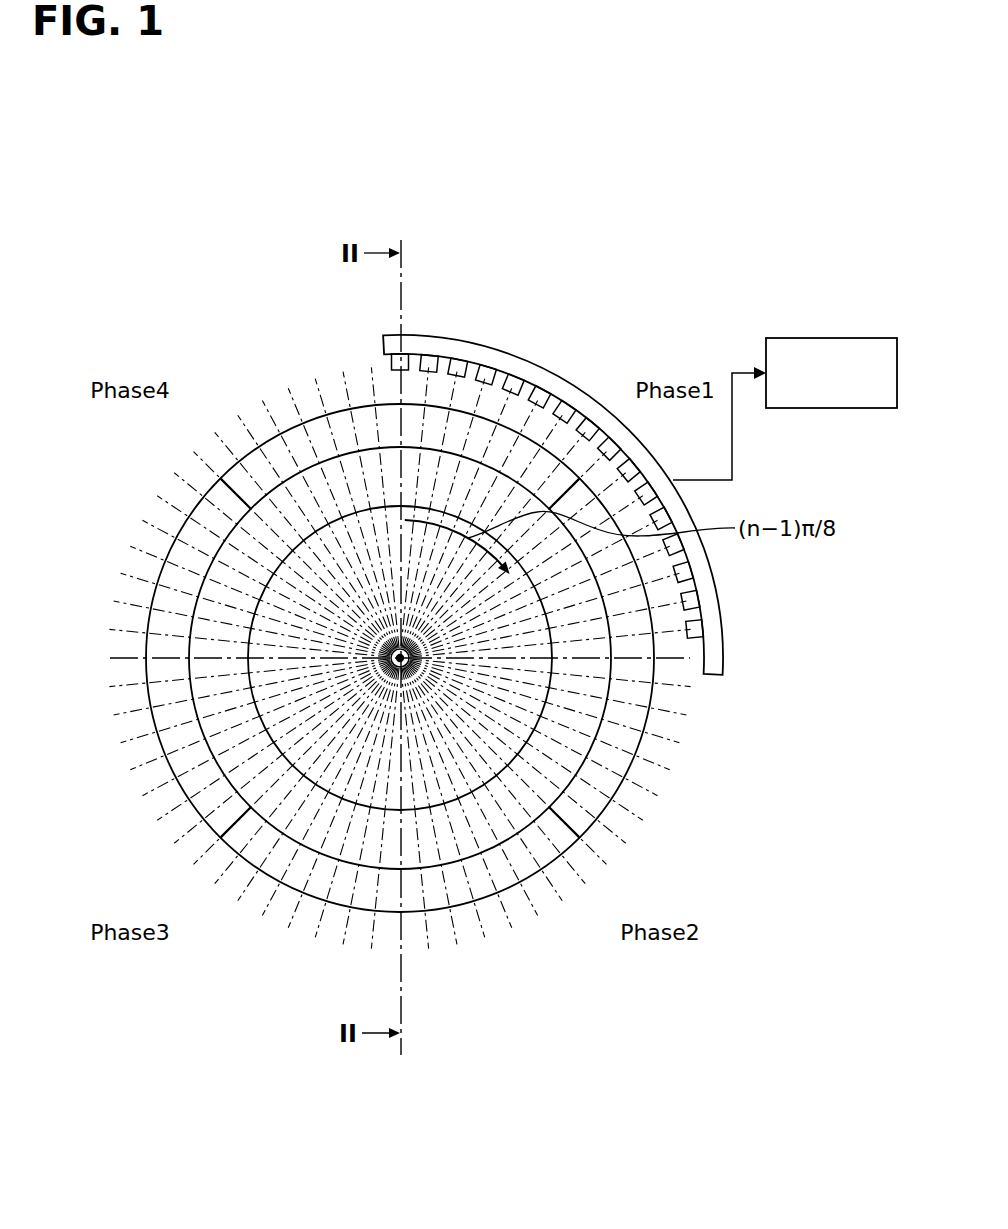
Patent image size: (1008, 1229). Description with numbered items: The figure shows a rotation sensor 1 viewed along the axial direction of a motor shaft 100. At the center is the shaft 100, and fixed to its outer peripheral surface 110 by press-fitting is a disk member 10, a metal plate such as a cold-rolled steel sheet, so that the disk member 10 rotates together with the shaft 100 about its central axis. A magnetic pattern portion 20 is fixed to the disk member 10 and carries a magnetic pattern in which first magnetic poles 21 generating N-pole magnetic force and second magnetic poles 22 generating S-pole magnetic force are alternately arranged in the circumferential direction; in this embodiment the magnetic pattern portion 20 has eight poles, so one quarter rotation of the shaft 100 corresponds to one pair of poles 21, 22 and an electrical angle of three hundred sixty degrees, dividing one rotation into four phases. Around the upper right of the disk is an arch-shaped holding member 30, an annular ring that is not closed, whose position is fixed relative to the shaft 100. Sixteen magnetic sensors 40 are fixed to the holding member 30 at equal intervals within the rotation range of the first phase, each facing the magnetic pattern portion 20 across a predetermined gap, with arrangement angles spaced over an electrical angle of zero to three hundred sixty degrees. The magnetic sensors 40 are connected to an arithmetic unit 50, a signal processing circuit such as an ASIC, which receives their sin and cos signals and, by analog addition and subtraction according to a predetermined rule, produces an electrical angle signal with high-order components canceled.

The rotation sensor 1 is at (163, 549).
The disk member 10 is at (355, 850).
The shaft 100 is at (267, 695).
The outer peripheral surface 110 is at (248, 632).
The magnetic pattern portion 20 is at (165, 668).
The first magnetic pole 21 is at (635, 718).
The second magnetic pole 22 is at (458, 883).
The holding member 30 is at (475, 342).
The magnetic sensor 40 is at (513, 375).
The arithmetic unit 50 is at (826, 338).